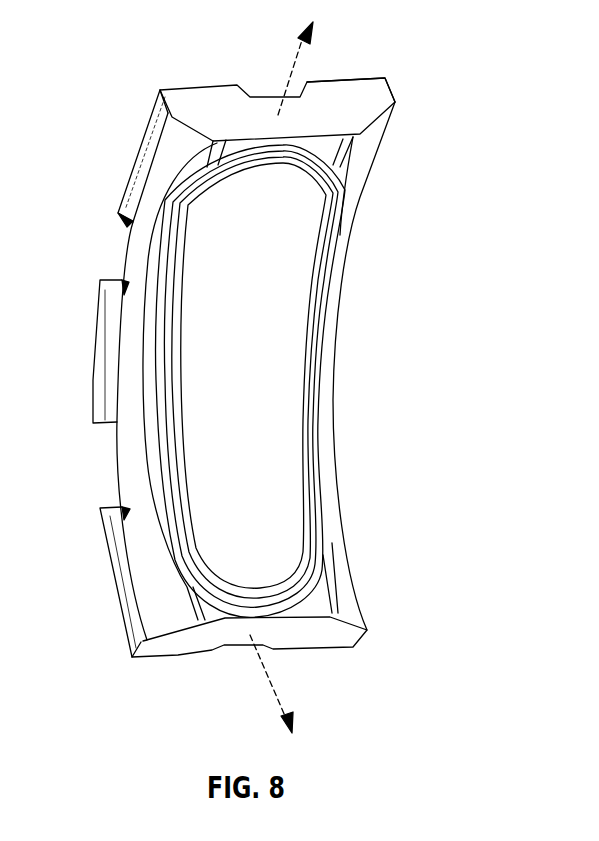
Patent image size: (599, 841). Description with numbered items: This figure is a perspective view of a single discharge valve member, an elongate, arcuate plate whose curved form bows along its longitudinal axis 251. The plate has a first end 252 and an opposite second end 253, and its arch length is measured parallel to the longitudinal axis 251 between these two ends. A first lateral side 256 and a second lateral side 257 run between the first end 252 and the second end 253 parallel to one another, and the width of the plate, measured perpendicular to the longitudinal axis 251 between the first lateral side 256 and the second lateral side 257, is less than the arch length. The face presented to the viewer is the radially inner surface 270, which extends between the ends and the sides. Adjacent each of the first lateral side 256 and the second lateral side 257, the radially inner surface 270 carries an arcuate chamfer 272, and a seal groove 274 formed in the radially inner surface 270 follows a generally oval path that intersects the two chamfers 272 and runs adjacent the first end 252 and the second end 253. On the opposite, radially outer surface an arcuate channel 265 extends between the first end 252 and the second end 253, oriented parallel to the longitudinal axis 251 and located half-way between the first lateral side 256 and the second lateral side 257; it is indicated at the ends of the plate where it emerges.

The longitudinal axis 251 is at (288, 68).
The first end 252 is at (172, 101).
The second end 253 is at (167, 650).
The first lateral side 256 is at (130, 173).
The second lateral side 257 is at (397, 98).
The arcuate channel 265 is at (270, 647).
The radially inner surface 270 is at (292, 340).
The arcuate chamfer 272 is at (125, 432).
The seal groove 274 is at (328, 546).